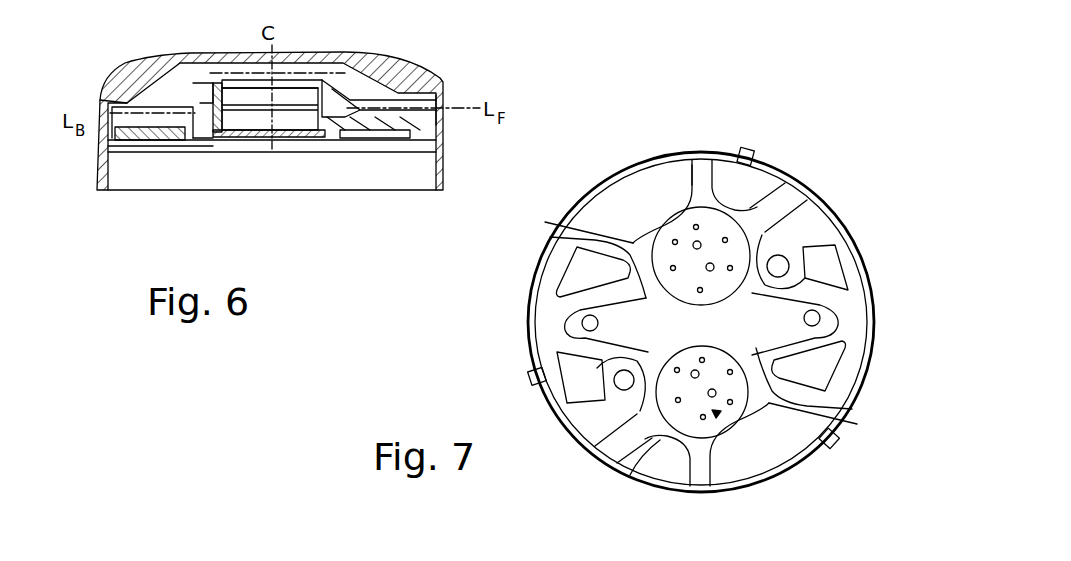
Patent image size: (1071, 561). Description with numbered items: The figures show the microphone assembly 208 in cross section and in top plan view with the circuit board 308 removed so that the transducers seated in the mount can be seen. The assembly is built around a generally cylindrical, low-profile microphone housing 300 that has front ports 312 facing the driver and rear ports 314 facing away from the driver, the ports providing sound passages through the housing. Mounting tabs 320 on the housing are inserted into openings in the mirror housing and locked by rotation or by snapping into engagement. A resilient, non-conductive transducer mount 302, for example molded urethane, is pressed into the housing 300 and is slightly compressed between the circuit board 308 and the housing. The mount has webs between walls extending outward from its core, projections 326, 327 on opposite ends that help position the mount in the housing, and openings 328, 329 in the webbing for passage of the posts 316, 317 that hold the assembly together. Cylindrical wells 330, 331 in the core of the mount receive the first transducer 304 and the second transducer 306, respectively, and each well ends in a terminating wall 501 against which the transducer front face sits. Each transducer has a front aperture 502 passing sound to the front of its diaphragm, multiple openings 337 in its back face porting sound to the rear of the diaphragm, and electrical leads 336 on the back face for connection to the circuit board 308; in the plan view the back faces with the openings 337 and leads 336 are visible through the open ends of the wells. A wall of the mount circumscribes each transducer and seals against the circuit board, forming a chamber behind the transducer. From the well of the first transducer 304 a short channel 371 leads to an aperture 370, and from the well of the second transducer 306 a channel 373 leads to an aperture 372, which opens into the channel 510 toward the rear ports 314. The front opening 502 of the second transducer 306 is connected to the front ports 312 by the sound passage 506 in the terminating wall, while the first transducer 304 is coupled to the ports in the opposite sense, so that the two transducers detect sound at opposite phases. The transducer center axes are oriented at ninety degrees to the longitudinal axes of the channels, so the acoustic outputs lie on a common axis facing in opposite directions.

In FIG. 7, the microphone assembly 208 is at (581, 186).
In FIG. 6, the microphone housing 300 is at (420, 80).
In FIG. 6, the transducer mount 302 is at (437, 127).
In FIG. 7, the first transducer 304 is at (699, 212).
In FIG. 6, the second transducer 306 is at (210, 145).
In FIG. 7, the second transducer 306 is at (718, 418).
In FIG. 6, the circuit board 308 is at (393, 152).
In FIG. 6, the front ports 312 is at (440, 84).
In FIG. 6, the rear ports 314 is at (113, 103).
In FIG. 7, the post 316 is at (581, 320).
In FIG. 7, the post 317 is at (822, 319).
In FIG. 7, the mounting tabs 320 is at (748, 148).
In FIG. 7, the projection 326 is at (688, 178).
In FIG. 7, the projection 327 is at (702, 473).
In FIG. 7, the opening 328 is at (836, 336).
In FIG. 7, the opening 329 is at (614, 375).
In FIG. 7, the cylindrical well 330 is at (590, 233).
In FIG. 7, the cylindrical well 331 is at (822, 400).
In FIG. 6, the electrical leads 336 is at (230, 136).
In FIG. 7, the electrical leads 336 is at (733, 215).
In FIG. 7, the openings 337 is at (674, 240).
In FIG. 7, the aperture 370 is at (782, 247).
In FIG. 7, the channel 371 is at (781, 264).
In FIG. 6, the aperture 372 is at (128, 148).
In FIG. 7, the aperture 372 is at (601, 421).
In FIG. 6, the channel 373 is at (178, 160).
In FIG. 7, the channel 373 is at (640, 443).
In FIG. 6, the terminating wall 501 is at (212, 82).
In FIG. 6, the front aperture 502 is at (292, 90).
In FIG. 6, the channel 506 is at (398, 99).
In FIG. 6, the channel 510 is at (138, 113).